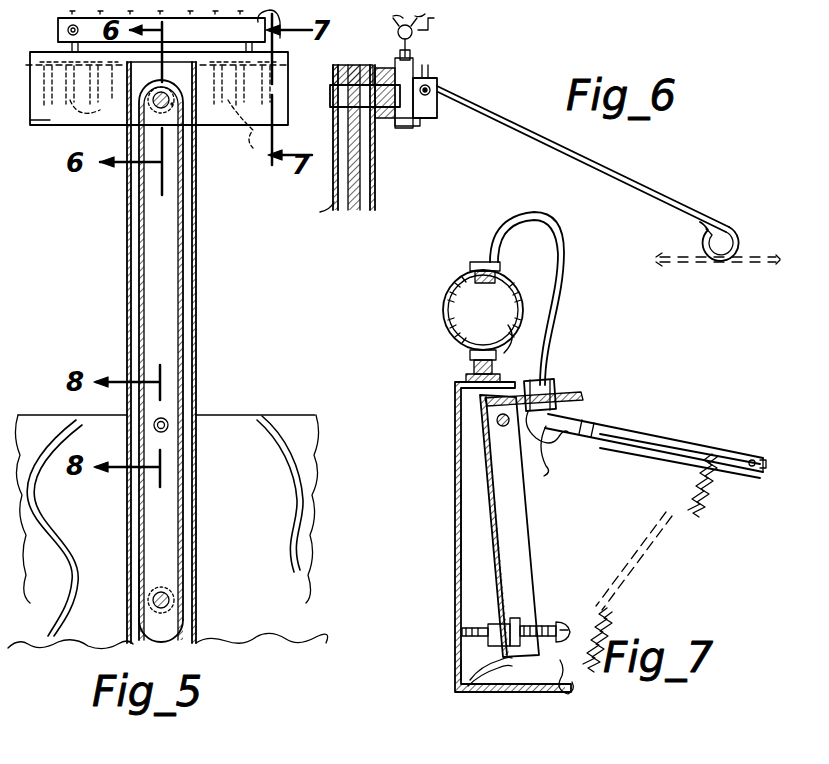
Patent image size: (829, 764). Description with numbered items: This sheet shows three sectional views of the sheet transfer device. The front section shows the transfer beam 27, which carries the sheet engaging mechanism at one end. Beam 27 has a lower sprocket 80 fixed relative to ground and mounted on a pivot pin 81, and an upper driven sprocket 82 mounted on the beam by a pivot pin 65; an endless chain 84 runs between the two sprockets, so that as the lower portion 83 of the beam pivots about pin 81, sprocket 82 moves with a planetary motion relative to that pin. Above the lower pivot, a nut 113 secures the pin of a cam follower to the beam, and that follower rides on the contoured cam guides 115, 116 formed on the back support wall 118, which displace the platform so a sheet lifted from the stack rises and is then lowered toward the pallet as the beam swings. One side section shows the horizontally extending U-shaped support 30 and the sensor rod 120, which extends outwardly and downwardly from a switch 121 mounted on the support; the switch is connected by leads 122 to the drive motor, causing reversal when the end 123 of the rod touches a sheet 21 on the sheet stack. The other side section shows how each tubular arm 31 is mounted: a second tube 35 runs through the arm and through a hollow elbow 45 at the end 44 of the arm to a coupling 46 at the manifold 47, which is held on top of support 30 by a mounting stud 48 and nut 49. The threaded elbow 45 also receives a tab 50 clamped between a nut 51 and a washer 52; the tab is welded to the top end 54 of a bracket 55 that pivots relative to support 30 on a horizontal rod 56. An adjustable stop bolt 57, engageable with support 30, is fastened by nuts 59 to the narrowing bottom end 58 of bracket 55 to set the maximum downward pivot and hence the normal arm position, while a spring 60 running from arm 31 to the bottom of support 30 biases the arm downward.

In FIG. 6, the sheet 21 is at (688, 266).
In FIG. 5, the transfer beam 27 is at (196, 282).
In FIG. 6, the transfer beam 27 is at (374, 176).
In FIG. 5, the U-shaped support 30 is at (82, 125).
In FIG. 6, the U-shaped support 30 is at (400, 126).
In FIG. 7, the U-shaped support 30 is at (456, 666).
In FIG. 7, the arm 31 is at (686, 424).
In FIG. 5, the tube 35 is at (274, 18).
In FIG. 7, the tube 35 is at (520, 218).
In FIG. 7, the end of arm 44 is at (620, 450).
In FIG. 7, the hollow elbow 45 is at (530, 452).
In FIG. 7, the coupling 46 is at (472, 260).
In FIG. 5, the manifold 47 is at (58, 27).
In FIG. 6, the manifold 47 is at (396, 30).
In FIG. 7, the manifold 47 is at (438, 314).
In FIG. 7, the mounting stud 48 is at (466, 372).
In FIG. 7, the nut 49 is at (493, 330).
In FIG. 7, the tab 50 is at (576, 410).
In FIG. 7, the nut 51 is at (558, 380).
In FIG. 7, the washer 52 is at (550, 438).
In FIG. 7, the top end of bracket 54 is at (458, 396).
In FIG. 5, the bracket 55 is at (232, 120).
In FIG. 7, the bracket 55 is at (520, 520).
In FIG. 5, the rod 56 is at (58, 131).
In FIG. 7, the rod 56 is at (498, 420).
In FIG. 7, the stop bolt 57 is at (562, 582).
In FIG. 7, the bottom end of bracket 58 is at (482, 588).
In FIG. 7, the nuts 59 is at (466, 668).
In FIG. 7, the spring 60 is at (678, 514).
In FIG. 5, the pivot pin 65 is at (170, 100).
In FIG. 5, the lower sprocket 80 is at (174, 584).
In FIG. 5, the pivot pin 81 is at (176, 606).
In FIG. 5, the upper driven sprocket 82 is at (148, 110).
In FIG. 6, the upper driven sprocket 82 is at (346, 66).
In FIG. 5, the lower portion of beam 83 is at (139, 594).
In FIG. 5, the endless chain 84 is at (182, 330).
In FIG. 6, the endless chain 84 is at (356, 196).
In FIG. 5, the nut 113 is at (166, 420).
In FIG. 5, the cam guide 115 is at (26, 490).
In FIG. 5, the cam guide 116 is at (302, 486).
In FIG. 5, the back support wall 118 is at (216, 432).
In FIG. 6, the sensor rod 120 is at (626, 126).
In FIG. 6, the switch 121 is at (432, 82).
In FIG. 6, the leads 122 is at (430, 66).
In FIG. 6, the end of sensor 123 is at (700, 235).